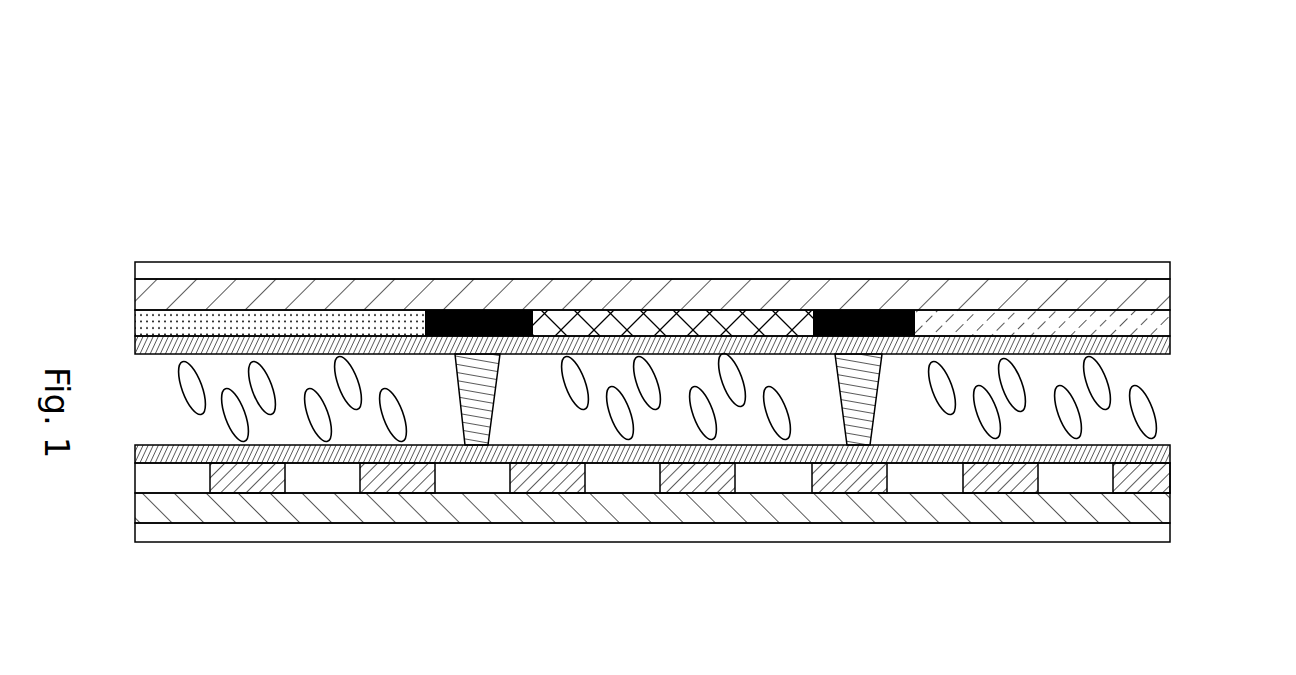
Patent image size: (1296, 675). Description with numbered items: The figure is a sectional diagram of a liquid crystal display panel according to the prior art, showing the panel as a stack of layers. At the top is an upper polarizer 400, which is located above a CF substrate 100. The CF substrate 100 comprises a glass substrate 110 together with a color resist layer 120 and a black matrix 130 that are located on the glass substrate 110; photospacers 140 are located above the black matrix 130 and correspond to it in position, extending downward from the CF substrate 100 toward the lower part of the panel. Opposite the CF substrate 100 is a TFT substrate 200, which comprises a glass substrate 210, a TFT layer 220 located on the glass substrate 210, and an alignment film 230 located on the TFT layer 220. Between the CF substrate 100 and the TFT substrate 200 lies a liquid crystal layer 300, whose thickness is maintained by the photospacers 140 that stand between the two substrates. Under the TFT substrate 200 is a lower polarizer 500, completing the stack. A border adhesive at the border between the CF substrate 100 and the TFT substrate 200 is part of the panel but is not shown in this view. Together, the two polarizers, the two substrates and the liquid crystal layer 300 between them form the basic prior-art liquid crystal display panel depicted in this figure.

The CF substrate 100 is at (702, 233).
The glass substrate 110 is at (230, 297).
The color resist layer 120 is at (973, 320).
The black matrix 130 is at (537, 317).
The photospacers 140 is at (475, 440).
The TFT substrate 200 is at (702, 541).
The glass substrate 210 is at (698, 508).
The TFT layer 220 is at (838, 492).
The alignment film 230 is at (1060, 462).
The liquid crystal layer 300 is at (1133, 393).
The upper polarizer 400 is at (1170, 266).
The lower polarizer 500 is at (1170, 532).